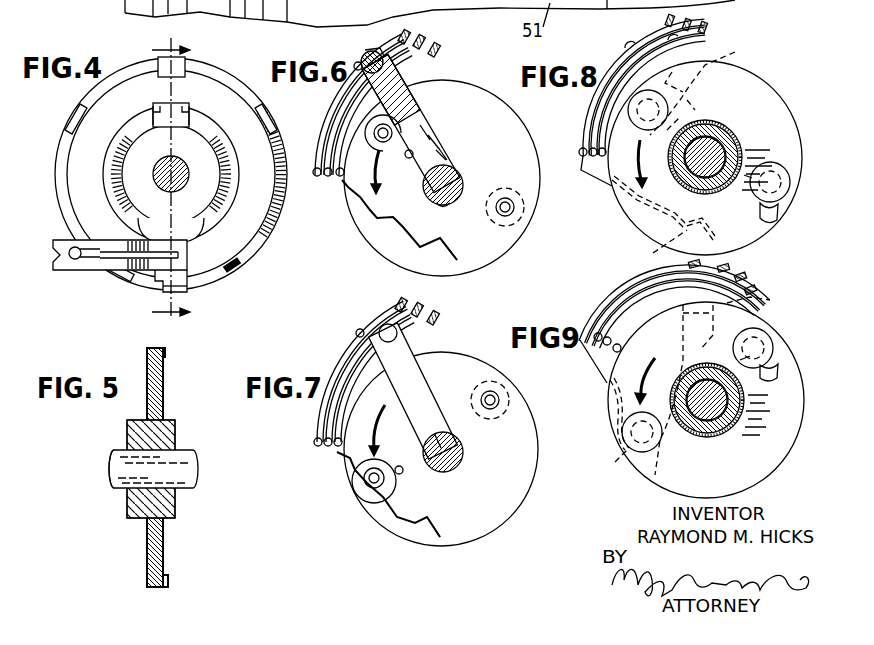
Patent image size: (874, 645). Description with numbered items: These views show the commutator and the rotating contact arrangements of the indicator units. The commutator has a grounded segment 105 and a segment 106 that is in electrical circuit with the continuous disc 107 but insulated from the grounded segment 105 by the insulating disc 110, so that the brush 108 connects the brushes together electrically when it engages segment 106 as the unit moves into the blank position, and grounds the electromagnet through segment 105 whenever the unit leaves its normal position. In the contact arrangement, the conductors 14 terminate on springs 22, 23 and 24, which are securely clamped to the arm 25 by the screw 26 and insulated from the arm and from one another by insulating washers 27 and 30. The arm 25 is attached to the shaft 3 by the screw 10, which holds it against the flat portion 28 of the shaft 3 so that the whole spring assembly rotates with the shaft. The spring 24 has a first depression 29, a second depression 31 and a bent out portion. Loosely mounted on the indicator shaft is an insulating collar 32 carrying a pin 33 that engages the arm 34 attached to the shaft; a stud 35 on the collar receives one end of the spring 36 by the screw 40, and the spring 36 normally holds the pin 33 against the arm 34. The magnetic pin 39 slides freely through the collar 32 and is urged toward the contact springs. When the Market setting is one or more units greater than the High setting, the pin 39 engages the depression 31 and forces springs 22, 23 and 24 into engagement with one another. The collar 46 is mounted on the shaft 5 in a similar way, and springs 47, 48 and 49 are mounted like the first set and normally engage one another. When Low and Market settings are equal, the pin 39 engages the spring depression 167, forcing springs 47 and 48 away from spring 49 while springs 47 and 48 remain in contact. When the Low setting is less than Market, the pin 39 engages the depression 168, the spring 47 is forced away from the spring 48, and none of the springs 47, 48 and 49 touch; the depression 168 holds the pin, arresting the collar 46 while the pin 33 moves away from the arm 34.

In FIG. 4, the shaft 3 is at (161, 163).
In FIG. 5, the shaft 3 is at (128, 466).
In FIG. 6, the shaft 3 is at (463, 176).
In FIG. 7, the shaft 3 is at (451, 441).
In FIG. 4, the shaft 5 is at (163, 180).
In FIG. 8, the shaft 5 is at (705, 153).
In FIG. 9, the shaft 5 is at (712, 360).
In FIG. 6, the screw 10 is at (447, 205).
In FIG. 6, the conductors 14 is at (423, 39).
In FIG. 7, the conductors 14 is at (437, 313).
In FIG. 8, the conductors 14 is at (666, 31).
In FIG. 9, the conductors 14 is at (722, 277).
In FIG. 6, the spring 22 is at (362, 118).
In FIG. 7, the spring 22 is at (353, 370).
In FIG. 6, the spring 23 is at (345, 137).
In FIG. 7, the spring 23 is at (335, 404).
In FIG. 6, the spring 24 is at (345, 160).
In FIG. 7, the spring 24 is at (337, 423).
In FIG. 6, the arm 25 is at (410, 118).
In FIG. 7, the arm 25 is at (414, 393).
In FIG. 8, the arm 25 is at (722, 63).
In FIG. 9, the arm 25 is at (747, 312).
In FIG. 6, the screw 26 is at (369, 56).
In FIG. 7, the screw 26 is at (384, 332).
In FIG. 6, the insulating washer 27 is at (370, 97).
In FIG. 7, the insulating washer 27 is at (365, 342).
In FIG. 6, the flat portion 28 is at (442, 150).
In FIG. 7, the flat portion 28 is at (436, 435).
In FIG. 6, the first depression 29 is at (372, 216).
In FIG. 7, the first depression 29 is at (360, 490).
In FIG. 6, the insulating washer 30 is at (360, 66).
In FIG. 6, the second depression 31 is at (420, 250).
In FIG. 7, the second depression 31 is at (410, 520).
In FIG. 7, the insulating collar 32 is at (525, 476).
In FIG. 6, the pin 33 is at (411, 151).
In FIG. 7, the pin 33 is at (400, 468).
In FIG. 8, the pin 33 is at (692, 109).
In FIG. 9, the pin 33 is at (672, 350).
In FIG. 6, the arm 34 is at (388, 172).
In FIG. 7, the arm 34 is at (415, 452).
In FIG. 8, the arm 34 is at (651, 164).
In FIG. 9, the arm 34 is at (663, 428).
In FIG. 6, the stud 35 is at (512, 205).
In FIG. 7, the stud 35 is at (499, 394).
In FIG. 8, the stud 35 is at (783, 167).
In FIG. 8, the spring 36 is at (737, 137).
In FIG. 9, the spring 36 is at (745, 400).
In FIG. 6, the pin 39 is at (377, 141).
In FIG. 7, the pin 39 is at (387, 487).
In FIG. 8, the pin 39 is at (653, 107).
In FIG. 9, the pin 39 is at (655, 447).
In FIG. 8, the screw 40 is at (768, 222).
In FIG. 9, the screw 40 is at (759, 368).
In FIG. 8, the collar 46 is at (775, 107).
In FIG. 9, the collar 46 is at (788, 385).
In FIG. 8, the spring 47 is at (618, 67).
In FIG. 9, the spring 47 is at (617, 307).
In FIG. 8, the spring 48 is at (608, 80).
In FIG. 9, the spring 48 is at (617, 323).
In FIG. 8, the spring 49 is at (617, 110).
In FIG. 9, the spring 49 is at (630, 328).
In FIG. 4, the grounded segment 105 is at (258, 249).
In FIG. 5, the grounded segment 105 is at (165, 383).
In FIG. 4, the segment 106 is at (199, 244).
In FIG. 5, the segment 106 is at (166, 566).
In FIG. 5, the continuous disc 107 is at (149, 556).
In FIG. 4, the brush 108 is at (65, 262).
In FIG. 4, the insulating disc 110 is at (245, 270).
In FIG. 5, the insulating disc 110 is at (149, 362).
In FIG. 8, the spring depression 167 is at (630, 213).
In FIG. 9, the spring depression 167 is at (608, 392).
In FIG. 8, the depression 168 is at (665, 245).
In FIG. 9, the depression 168 is at (620, 458).